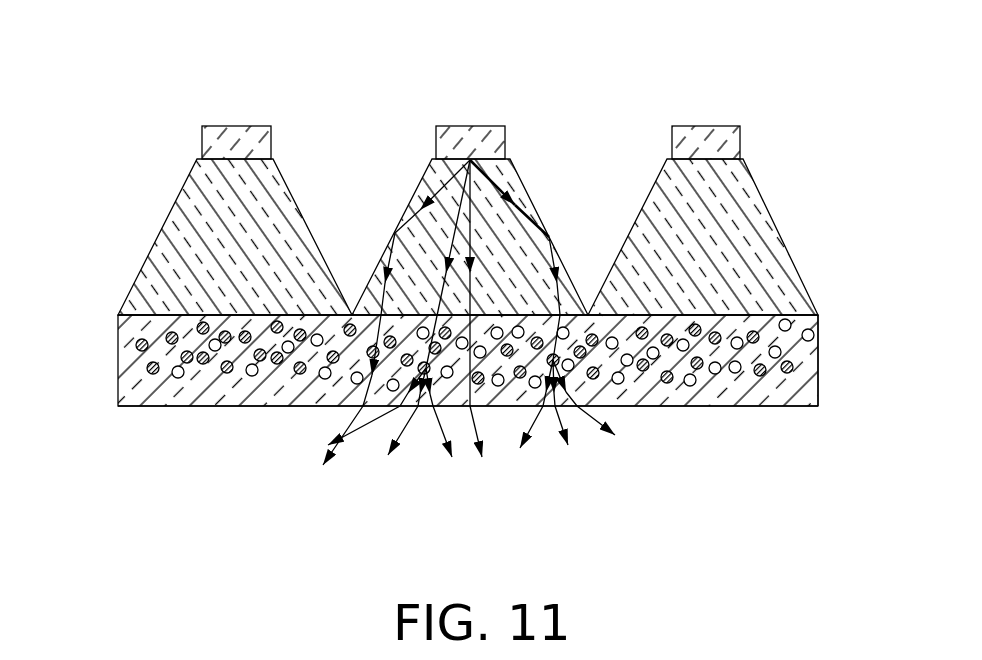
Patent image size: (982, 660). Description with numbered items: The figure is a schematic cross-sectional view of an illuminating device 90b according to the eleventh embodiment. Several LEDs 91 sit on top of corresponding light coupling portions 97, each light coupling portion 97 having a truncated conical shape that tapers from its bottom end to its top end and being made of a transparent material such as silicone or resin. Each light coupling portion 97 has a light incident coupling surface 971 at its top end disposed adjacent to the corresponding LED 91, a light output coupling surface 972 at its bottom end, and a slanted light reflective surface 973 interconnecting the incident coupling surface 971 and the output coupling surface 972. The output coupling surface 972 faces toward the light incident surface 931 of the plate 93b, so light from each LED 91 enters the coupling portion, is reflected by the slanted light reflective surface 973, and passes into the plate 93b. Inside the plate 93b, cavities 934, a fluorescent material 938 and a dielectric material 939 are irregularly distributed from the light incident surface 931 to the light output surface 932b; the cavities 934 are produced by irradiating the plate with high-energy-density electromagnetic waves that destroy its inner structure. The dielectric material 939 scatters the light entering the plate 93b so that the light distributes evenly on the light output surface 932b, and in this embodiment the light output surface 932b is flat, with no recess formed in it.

The illuminating device 90b is at (474, 46).
The LED 91 is at (474, 126).
The light coupling portion 97 is at (505, 180).
The light incident coupling surface 971 is at (456, 163).
The slanted light reflective surface 973 is at (414, 207).
The light output coupling surface 972 is at (380, 315).
The light incident surface 931 is at (146, 319).
The plate 93b is at (143, 377).
The light output surface 932b is at (147, 405).
The cavities 934 is at (819, 340).
The fluorescent material 938 is at (793, 368).
The dielectric material 939 is at (763, 377).